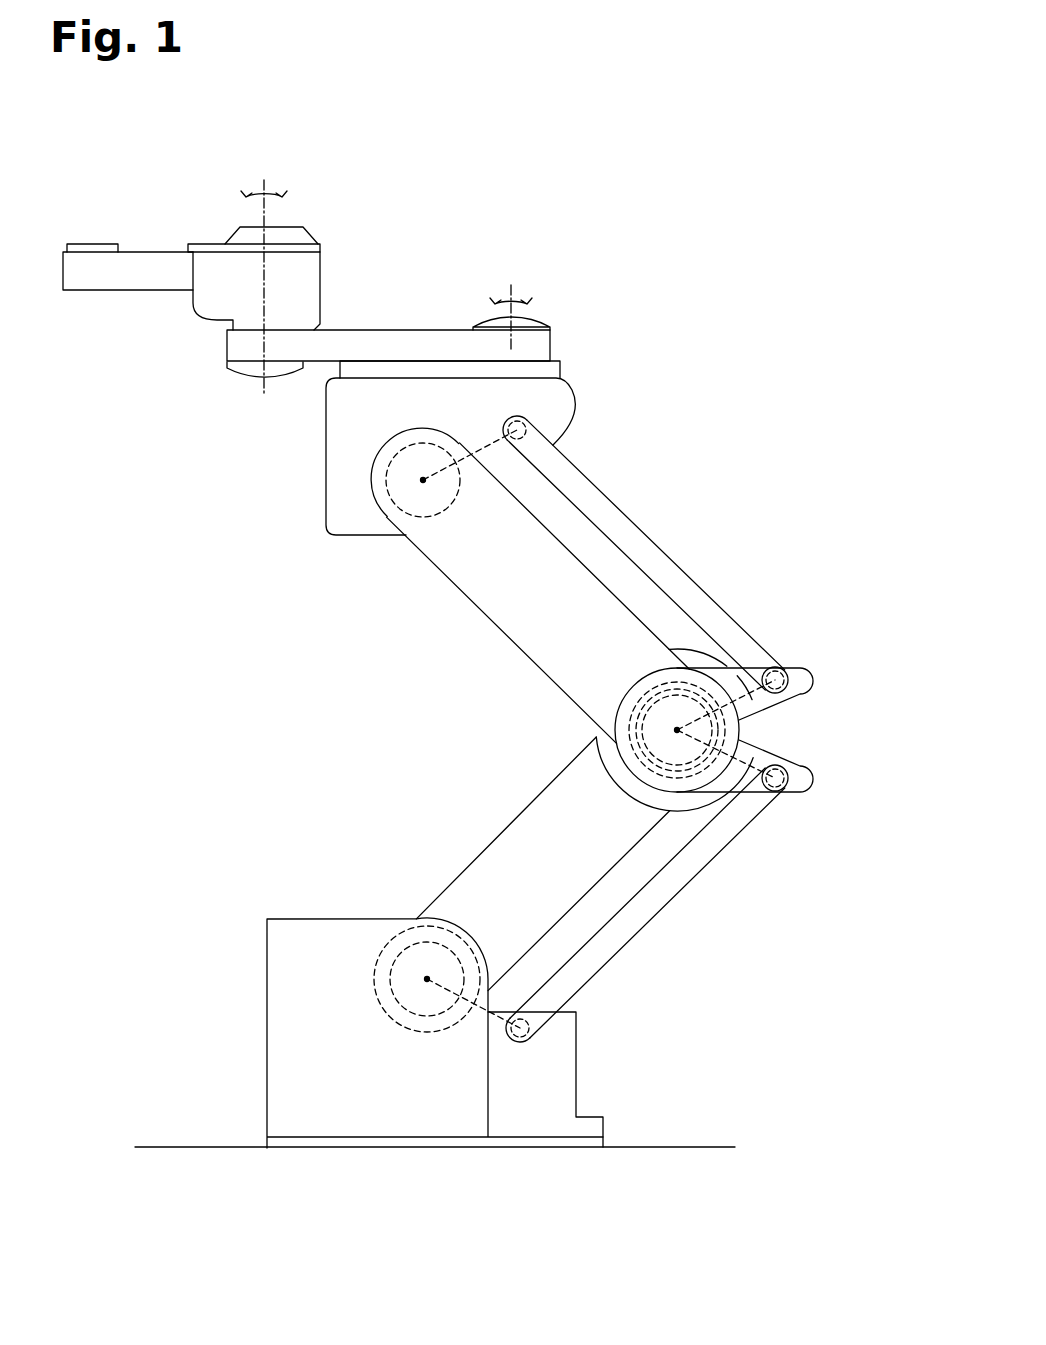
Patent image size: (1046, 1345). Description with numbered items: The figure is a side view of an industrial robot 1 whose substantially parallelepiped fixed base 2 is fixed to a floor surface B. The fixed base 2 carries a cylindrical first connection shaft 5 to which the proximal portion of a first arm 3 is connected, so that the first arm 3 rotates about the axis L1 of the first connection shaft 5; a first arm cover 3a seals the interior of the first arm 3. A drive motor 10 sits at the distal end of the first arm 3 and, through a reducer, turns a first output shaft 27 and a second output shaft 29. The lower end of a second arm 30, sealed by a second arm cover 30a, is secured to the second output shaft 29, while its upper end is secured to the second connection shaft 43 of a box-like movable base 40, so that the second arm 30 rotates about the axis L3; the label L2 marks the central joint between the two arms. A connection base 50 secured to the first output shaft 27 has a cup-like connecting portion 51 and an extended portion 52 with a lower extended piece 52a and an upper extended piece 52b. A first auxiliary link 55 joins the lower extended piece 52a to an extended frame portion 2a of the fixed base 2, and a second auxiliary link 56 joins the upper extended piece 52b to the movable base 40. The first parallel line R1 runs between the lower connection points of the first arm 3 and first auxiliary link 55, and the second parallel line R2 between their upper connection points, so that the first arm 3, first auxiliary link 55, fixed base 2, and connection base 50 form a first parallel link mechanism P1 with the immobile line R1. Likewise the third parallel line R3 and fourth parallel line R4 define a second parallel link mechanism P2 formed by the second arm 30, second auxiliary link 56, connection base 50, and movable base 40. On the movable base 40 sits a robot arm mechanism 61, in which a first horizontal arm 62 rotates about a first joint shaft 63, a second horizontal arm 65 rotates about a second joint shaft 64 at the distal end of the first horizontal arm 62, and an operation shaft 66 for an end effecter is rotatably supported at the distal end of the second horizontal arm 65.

The industrial robot 1 is at (608, 263).
The fixed base 2 is at (267, 982).
The extended frame portion 2a is at (576, 1045).
The first arm 3 is at (519, 814).
The first arm cover 3a is at (560, 773).
The first connection shaft 5 is at (423, 1031).
The drive motor 10 is at (597, 732).
The first output shaft 27 is at (647, 677).
The second output shaft 29 is at (632, 700).
The second arm 30 is at (505, 622).
The second arm cover 30a is at (460, 590).
The movable base 40 is at (326, 432).
The second connection shaft 43 is at (387, 513).
The connection base 50 is at (833, 659).
The connecting portion 51 is at (740, 730).
The extended portion 52 is at (872, 700).
The lower extended piece 52a is at (790, 756).
The upper extended piece 52b is at (790, 704).
The first auxiliary link 55 is at (680, 892).
The second auxiliary link 56 is at (648, 538).
The robot arm mechanism 61 is at (400, 314).
The first horizontal arm 62 is at (553, 348).
The first joint shaft 63 is at (548, 316).
The second joint shaft 64 is at (253, 226).
The second horizontal arm 65 is at (98, 292).
The operation shaft 66 is at (83, 243).
The axis of the first connection shaft L1 is at (427, 978).
The second joint axis L2 is at (677, 730).
The axis of the second connection shaft L3 is at (427, 481).
The first parallel line R1 is at (481, 1008).
The second parallel line R2 is at (767, 806).
The third parallel line R3 is at (770, 656).
The fourth parallel line R4 is at (480, 450).
The first parallel link mechanism P1 is at (795, 887).
The second parallel link mechanism P2 is at (683, 449).
The floor surface B is at (692, 1147).